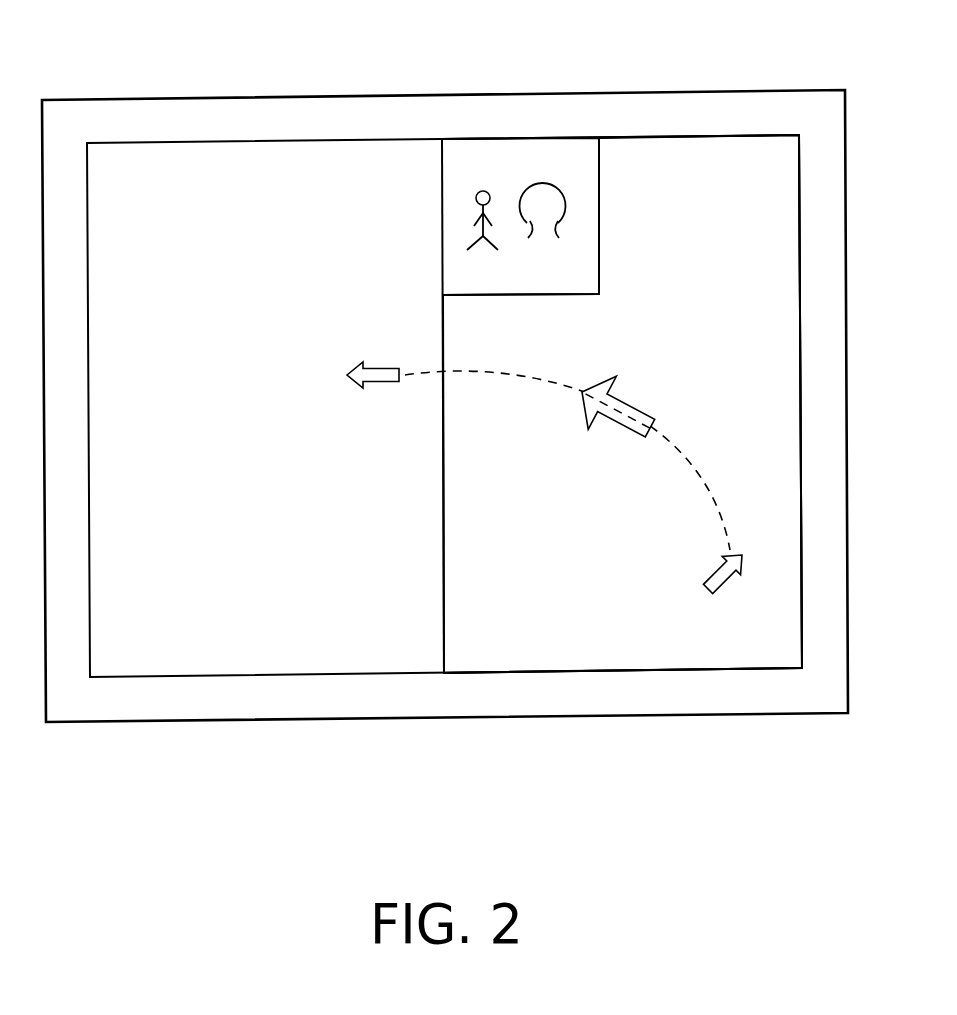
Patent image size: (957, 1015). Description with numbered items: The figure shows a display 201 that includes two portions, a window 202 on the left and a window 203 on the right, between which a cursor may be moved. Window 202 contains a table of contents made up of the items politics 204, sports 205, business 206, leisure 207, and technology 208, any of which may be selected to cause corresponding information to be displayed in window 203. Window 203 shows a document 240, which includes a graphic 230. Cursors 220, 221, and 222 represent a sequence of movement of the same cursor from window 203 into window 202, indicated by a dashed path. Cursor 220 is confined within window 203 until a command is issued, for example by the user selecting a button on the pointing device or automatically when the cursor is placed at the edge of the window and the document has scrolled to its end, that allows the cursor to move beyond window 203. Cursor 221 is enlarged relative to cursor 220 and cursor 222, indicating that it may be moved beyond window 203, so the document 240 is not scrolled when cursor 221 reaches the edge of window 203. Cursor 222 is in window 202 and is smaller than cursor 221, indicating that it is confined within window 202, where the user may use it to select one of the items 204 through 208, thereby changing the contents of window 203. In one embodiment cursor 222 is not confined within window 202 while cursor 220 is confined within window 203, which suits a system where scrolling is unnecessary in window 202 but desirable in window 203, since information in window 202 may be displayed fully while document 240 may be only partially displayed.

The display 201 is at (403, 95).
The window 202 is at (205, 143).
The window 203 is at (692, 135).
The politics 204 is at (194, 250).
The sports 205 is at (190, 340).
The business 206 is at (207, 430).
The leisure 207 is at (196, 518).
The technology 208 is at (224, 603).
The cursor 220 is at (713, 576).
The cursor 221 is at (617, 423).
The cursor 222 is at (388, 368).
The graphic 230 is at (564, 278).
The document 240 is at (729, 337).